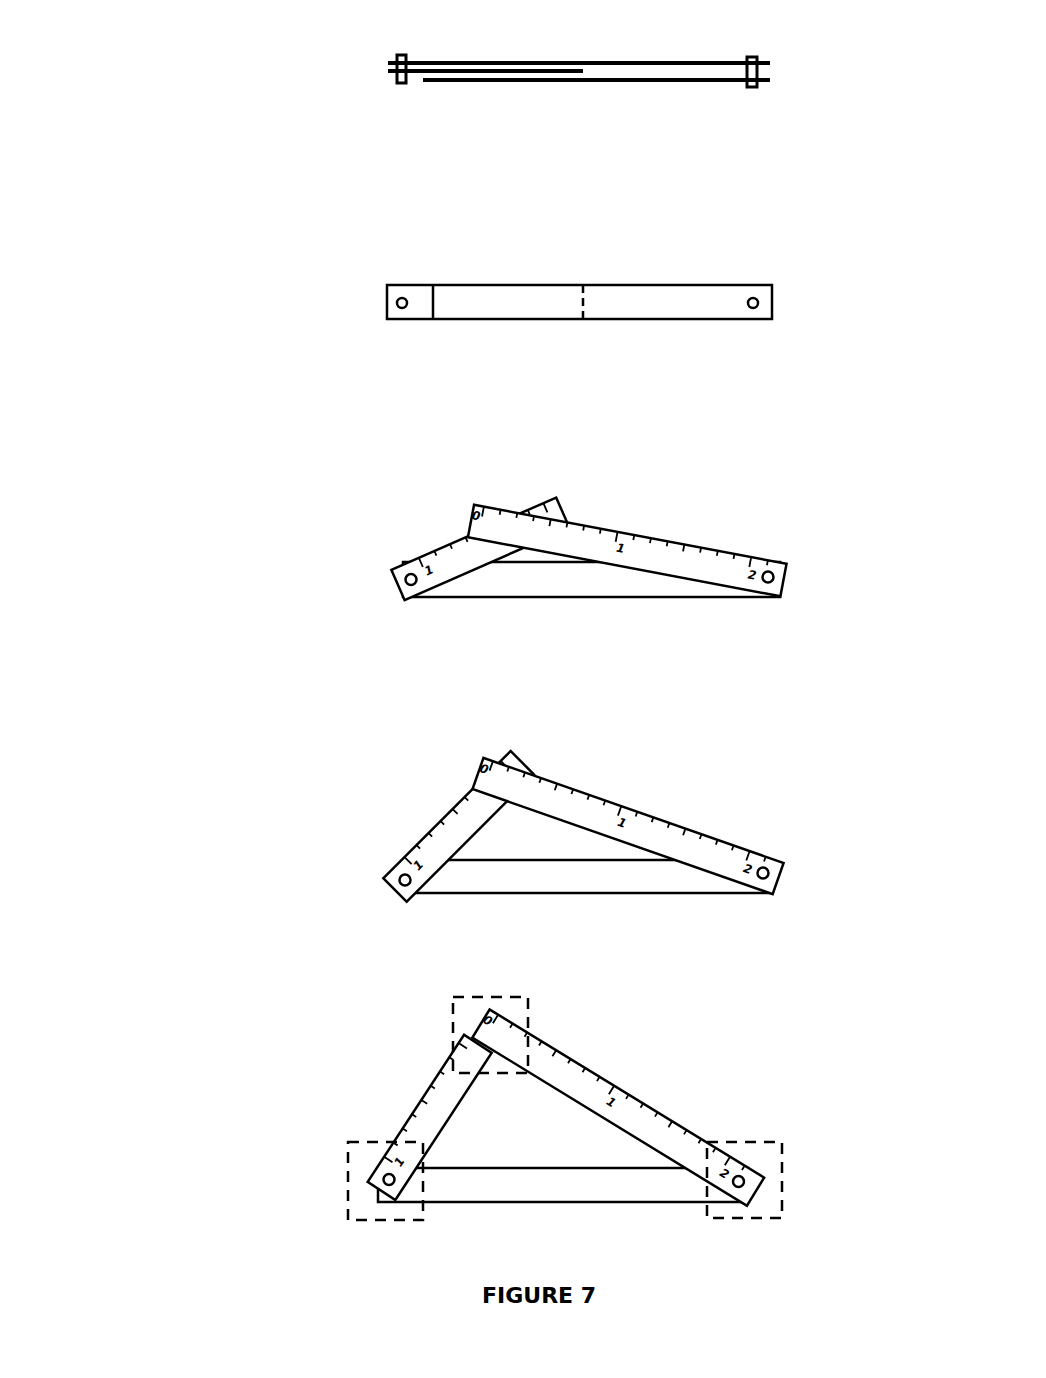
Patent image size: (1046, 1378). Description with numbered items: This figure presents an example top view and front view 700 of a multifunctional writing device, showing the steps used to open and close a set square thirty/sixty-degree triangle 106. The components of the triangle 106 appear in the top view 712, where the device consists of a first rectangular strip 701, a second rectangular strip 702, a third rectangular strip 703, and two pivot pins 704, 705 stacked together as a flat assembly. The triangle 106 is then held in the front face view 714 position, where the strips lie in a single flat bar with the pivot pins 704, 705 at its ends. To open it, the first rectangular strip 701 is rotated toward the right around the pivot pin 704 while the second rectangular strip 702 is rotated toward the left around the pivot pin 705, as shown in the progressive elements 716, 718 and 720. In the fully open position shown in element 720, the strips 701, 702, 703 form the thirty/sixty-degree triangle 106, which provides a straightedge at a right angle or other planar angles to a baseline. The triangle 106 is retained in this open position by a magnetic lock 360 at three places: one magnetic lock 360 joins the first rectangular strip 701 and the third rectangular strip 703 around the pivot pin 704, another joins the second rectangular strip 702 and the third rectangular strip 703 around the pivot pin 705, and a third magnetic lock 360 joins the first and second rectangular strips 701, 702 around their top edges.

The top view and front view 700 is at (108, 1232).
The set square thirty/sixty-degree triangle 106 is at (216, 72).
The first rectangular strip 701 is at (653, 93).
The second rectangular strip 702 is at (506, 72).
The third rectangular strip 703 is at (708, 55).
The pivot pin 704 is at (758, 95).
The pivot pin 705 is at (397, 92).
The magnetic lock 360 is at (535, 1018).
The top view 712 is at (593, 125).
The front face view 714 is at (593, 355).
The element 716 is at (603, 630).
The element 718 is at (603, 925).
The element 720 is at (591, 1245).